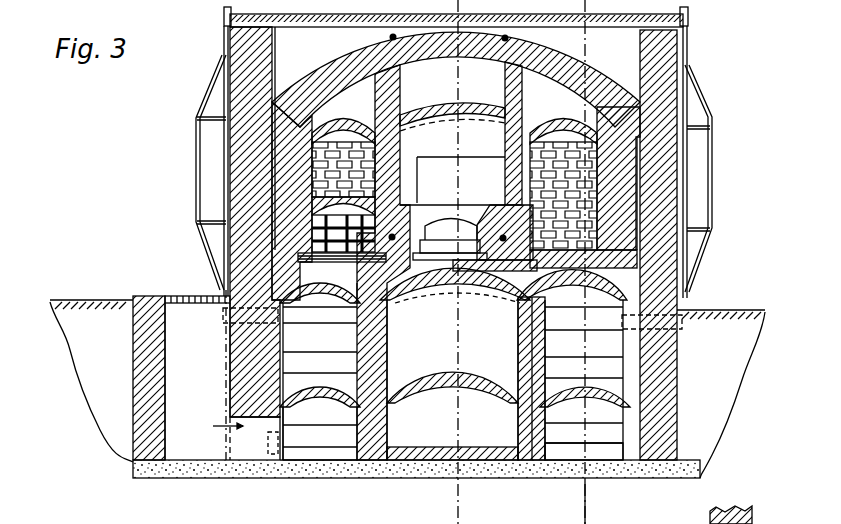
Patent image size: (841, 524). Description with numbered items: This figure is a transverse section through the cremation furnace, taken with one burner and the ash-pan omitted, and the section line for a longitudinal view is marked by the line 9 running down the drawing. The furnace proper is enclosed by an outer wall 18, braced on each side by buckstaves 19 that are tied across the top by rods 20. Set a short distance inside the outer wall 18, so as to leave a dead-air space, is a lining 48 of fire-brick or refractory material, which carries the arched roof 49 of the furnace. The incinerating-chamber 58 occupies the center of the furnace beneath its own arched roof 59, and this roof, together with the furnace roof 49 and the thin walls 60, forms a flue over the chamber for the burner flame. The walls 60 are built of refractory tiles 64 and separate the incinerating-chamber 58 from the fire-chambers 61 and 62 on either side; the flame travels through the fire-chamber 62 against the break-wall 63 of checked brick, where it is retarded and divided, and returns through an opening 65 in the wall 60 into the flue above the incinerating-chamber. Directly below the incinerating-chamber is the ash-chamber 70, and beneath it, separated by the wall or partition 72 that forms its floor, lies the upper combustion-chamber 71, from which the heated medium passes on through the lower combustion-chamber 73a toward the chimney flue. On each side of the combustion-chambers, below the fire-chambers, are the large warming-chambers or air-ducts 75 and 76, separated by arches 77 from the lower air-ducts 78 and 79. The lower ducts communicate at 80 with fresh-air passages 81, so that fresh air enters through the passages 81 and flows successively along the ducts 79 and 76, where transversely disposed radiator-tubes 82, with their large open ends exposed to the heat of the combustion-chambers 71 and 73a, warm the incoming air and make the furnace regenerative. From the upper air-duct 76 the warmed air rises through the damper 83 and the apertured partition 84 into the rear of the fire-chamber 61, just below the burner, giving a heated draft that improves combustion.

The section line 9 is at (579, 502).
The outer wall 18 is at (690, 384).
The buckstaves 19 is at (454, 162).
The rods 20 is at (456, 13).
The lining 48 is at (290, 158).
The arched roof 49 is at (597, 71).
The incinerating-chamber 58 is at (461, 176).
The arched roof 59 is at (470, 110).
The walls 60 is at (452, 170).
The fire-chamber 61 is at (562, 118).
The fire-chamber 62 is at (343, 120).
The break-wall 63 is at (300, 206).
The tiles 64 is at (504, 168).
The opening 65 is at (400, 97).
The ash-chamber 70 is at (450, 240).
The combustion-chamber 71 is at (452, 380).
The wall or partition 72 is at (474, 288).
The lower combustion-chamber 73a is at (452, 438).
The warming-chamber or air-duct 75 is at (320, 371).
The warming-chamber or air-duct 76 is at (572, 365).
The arches 77 is at (455, 403).
The lower air-duct 78 is at (320, 433).
The lower air-duct 79 is at (584, 453).
The communication 80 is at (246, 438).
The fresh-air passages or conduits 81 is at (181, 378).
The radiator-tubes 82 is at (453, 377).
The damper 83 is at (340, 264).
The apertured partition 84 is at (343, 224).